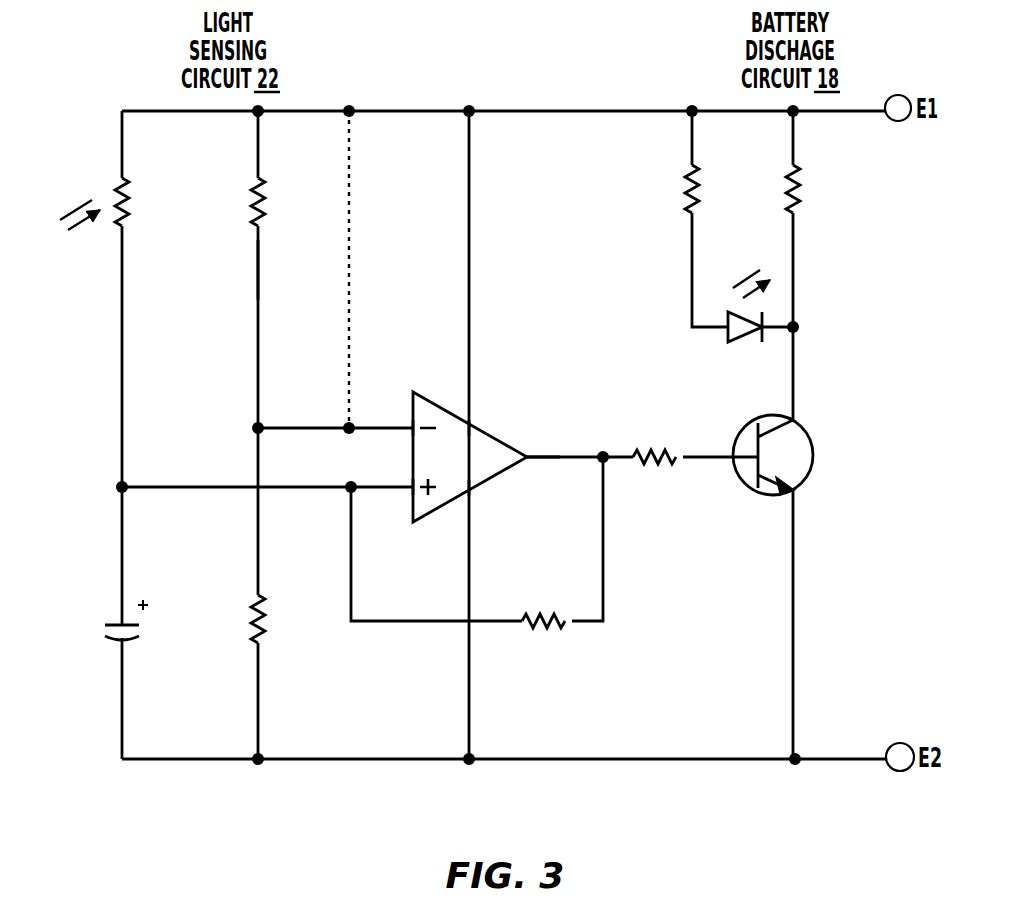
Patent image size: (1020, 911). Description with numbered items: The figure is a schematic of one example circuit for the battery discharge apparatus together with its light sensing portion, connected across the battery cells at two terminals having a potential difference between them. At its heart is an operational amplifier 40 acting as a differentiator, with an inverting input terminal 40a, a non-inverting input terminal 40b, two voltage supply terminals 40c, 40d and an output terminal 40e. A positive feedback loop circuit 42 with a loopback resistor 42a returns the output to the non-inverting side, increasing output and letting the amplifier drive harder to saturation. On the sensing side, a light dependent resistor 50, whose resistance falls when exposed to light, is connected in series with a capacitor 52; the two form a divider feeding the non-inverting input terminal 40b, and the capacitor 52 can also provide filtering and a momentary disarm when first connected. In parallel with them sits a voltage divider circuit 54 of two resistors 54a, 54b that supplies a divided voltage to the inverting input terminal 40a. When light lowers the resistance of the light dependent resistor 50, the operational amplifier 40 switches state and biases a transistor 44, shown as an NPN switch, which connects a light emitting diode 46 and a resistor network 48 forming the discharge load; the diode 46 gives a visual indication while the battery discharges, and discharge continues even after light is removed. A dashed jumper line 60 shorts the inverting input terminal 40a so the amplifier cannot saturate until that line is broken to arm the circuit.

The light dependent resistor 50 is at (123, 223).
The capacitor 52 is at (140, 632).
The voltage divider circuit 54 is at (240, 423).
The resistor of the voltage divider circuit 54a is at (264, 207).
The resistor of the voltage divider circuit 54b is at (262, 630).
The jumper line 60 is at (349, 268).
The operational amplifier 40 is at (461, 466).
The inverting input terminal 40a is at (413, 424).
The non-inverting input terminal 40b is at (410, 490).
The voltage supply terminal 40c is at (471, 427).
The voltage supply terminal 40d is at (470, 490).
The output terminal 40e is at (530, 453).
The positive feedback loop circuit 42 is at (605, 560).
The loopback resistor 42a is at (553, 627).
The transistor 44 is at (800, 432).
The light emitting diode 46 is at (745, 322).
The resistor network 48 is at (812, 216).